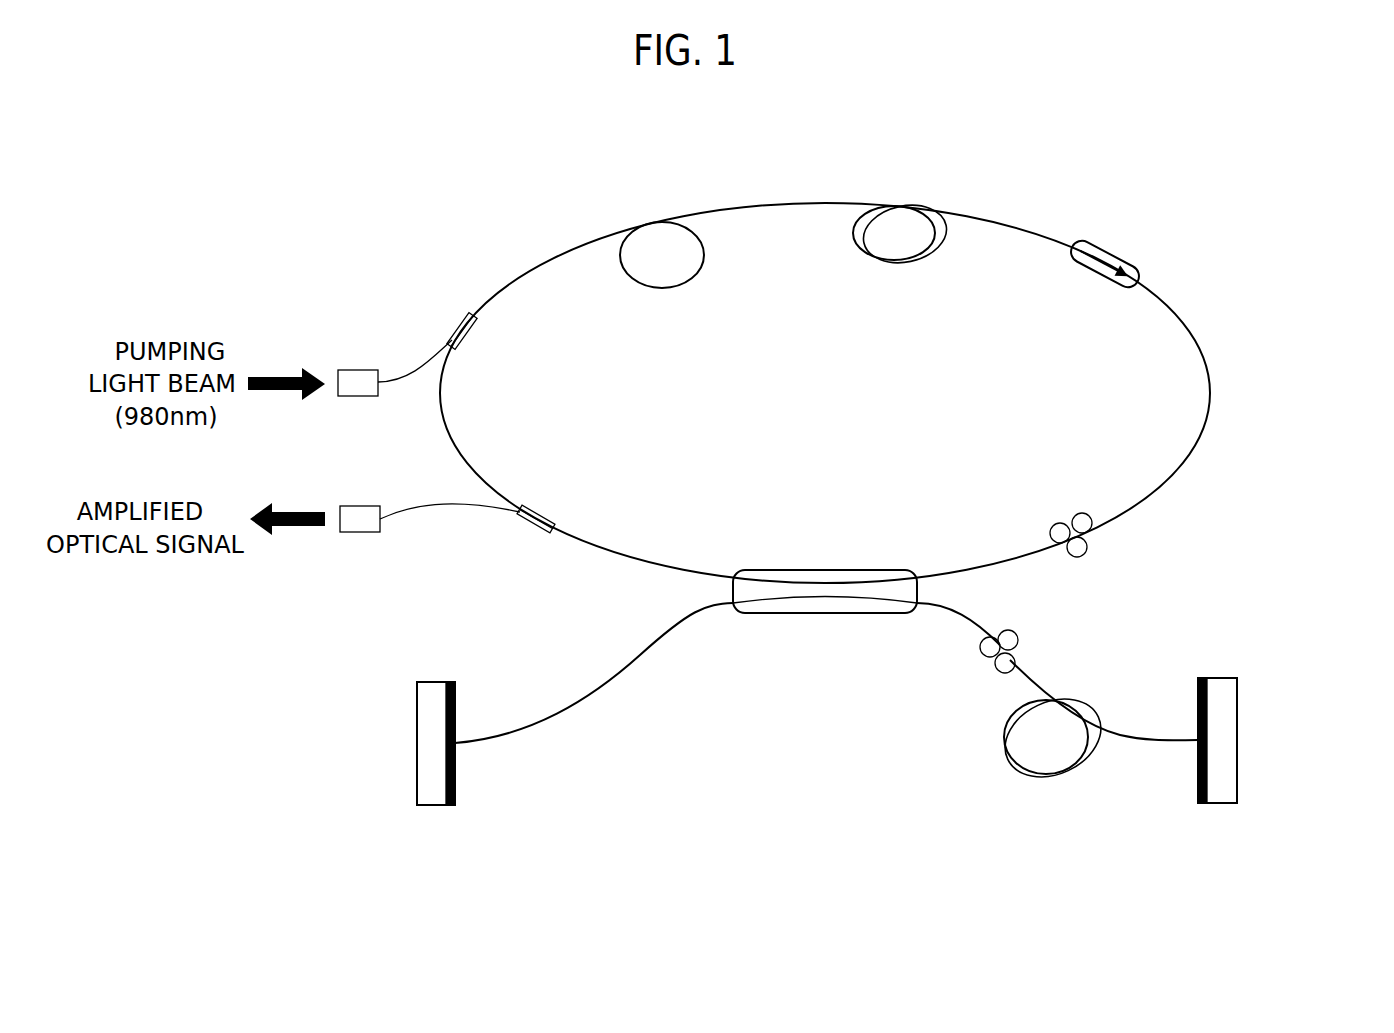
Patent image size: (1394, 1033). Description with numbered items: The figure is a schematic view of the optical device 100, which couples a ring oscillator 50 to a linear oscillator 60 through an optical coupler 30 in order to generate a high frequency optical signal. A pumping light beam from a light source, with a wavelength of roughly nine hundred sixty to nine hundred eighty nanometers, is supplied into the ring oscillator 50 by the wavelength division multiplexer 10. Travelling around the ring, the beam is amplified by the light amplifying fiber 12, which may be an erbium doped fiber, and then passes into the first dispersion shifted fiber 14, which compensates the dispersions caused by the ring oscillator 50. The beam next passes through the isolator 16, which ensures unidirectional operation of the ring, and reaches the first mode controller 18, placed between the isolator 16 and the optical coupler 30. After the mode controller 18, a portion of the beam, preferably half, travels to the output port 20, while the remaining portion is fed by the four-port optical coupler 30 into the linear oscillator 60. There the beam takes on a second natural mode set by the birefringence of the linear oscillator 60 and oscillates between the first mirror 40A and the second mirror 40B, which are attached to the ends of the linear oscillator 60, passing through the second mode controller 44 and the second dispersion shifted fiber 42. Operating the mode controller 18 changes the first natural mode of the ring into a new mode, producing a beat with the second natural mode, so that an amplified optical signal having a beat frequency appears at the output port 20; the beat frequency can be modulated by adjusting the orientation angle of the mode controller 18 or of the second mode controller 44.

The optical device 100 is at (1176, 130).
The wavelength division multiplexer 10 is at (453, 324).
The light amplifying fiber 12 is at (702, 230).
The first dispersion shifted fiber 14 is at (946, 222).
The isolator 16 is at (1112, 245).
The first mode controller 18 is at (1088, 549).
The output port 20 is at (545, 513).
The optical coupler 30 is at (822, 612).
The first mirror 40A is at (430, 681).
The second mirror 40B is at (1230, 678).
The second dispersion shifted fiber 42 is at (1027, 765).
The second mode controller 44 is at (985, 655).
The ring oscillator 50 is at (1243, 332).
The linear oscillator 60 is at (1295, 732).